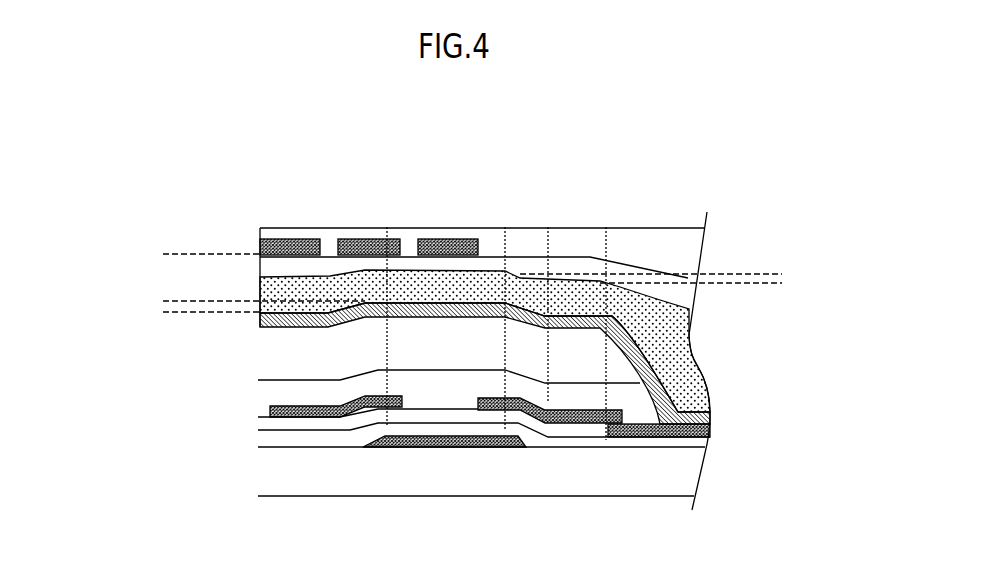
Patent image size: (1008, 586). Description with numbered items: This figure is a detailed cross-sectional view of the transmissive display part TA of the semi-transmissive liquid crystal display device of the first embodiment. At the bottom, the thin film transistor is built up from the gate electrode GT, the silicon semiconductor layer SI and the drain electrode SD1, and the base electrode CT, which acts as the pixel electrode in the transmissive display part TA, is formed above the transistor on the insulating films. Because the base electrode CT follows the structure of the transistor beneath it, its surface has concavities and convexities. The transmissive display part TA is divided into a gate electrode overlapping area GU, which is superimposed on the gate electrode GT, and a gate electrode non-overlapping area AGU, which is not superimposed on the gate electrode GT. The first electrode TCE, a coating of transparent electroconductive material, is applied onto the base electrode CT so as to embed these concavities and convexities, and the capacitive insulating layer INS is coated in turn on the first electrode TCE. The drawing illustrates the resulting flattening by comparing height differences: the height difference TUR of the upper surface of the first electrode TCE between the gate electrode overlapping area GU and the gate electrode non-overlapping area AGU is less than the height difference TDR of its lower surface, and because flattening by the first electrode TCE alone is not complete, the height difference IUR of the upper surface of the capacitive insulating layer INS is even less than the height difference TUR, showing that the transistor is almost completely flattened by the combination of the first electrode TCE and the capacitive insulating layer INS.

The transmissive display part TA is at (628, 157).
The gate electrode overlapping area GU is at (507, 227).
The gate electrode non-overlapping area AGU is at (605, 227).
The height difference of the capacitive insulating layer upper surface IUR is at (228, 262).
The height difference of the lower surface of the first electrode TDR is at (172, 319).
The height difference of the first electrode upper surface TUR is at (767, 290).
The capacitive insulating layer INS is at (689, 306).
The first electrode TCE is at (700, 368).
The base electrode CT is at (710, 426).
The gate electrode GT is at (443, 447).
The silicon semiconductor layer SI is at (513, 422).
The drain electrode SD1 is at (555, 423).